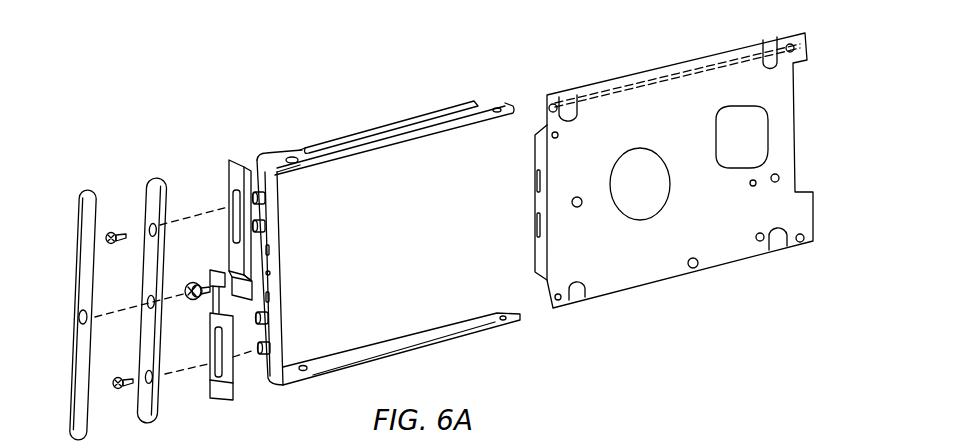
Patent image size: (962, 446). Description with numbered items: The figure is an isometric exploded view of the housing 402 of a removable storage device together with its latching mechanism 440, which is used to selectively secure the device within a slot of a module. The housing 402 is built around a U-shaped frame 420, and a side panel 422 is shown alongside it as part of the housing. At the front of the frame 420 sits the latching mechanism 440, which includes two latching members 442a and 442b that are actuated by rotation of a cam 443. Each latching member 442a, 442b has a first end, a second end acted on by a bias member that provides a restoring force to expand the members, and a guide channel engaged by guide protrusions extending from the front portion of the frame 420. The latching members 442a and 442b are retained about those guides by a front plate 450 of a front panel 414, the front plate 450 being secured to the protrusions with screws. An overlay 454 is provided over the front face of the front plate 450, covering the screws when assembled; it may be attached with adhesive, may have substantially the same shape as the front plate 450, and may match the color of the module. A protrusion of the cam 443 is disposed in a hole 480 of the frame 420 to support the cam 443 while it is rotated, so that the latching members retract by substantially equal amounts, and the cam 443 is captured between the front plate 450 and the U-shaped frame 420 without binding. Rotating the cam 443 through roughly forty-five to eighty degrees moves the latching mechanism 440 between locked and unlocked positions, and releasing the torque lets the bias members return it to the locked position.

The housing 402 is at (442, 53).
The front panel 414 is at (66, 140).
The frame 420 is at (423, 106).
The side panel 422 is at (650, 62).
The latching mechanism 440 is at (180, 118).
The latching member 442a is at (236, 164).
The latching member 442b is at (222, 402).
The cam 443 is at (193, 281).
The front plate 450 is at (147, 178).
The overlay 454 is at (79, 190).
The hole 480 is at (271, 273).